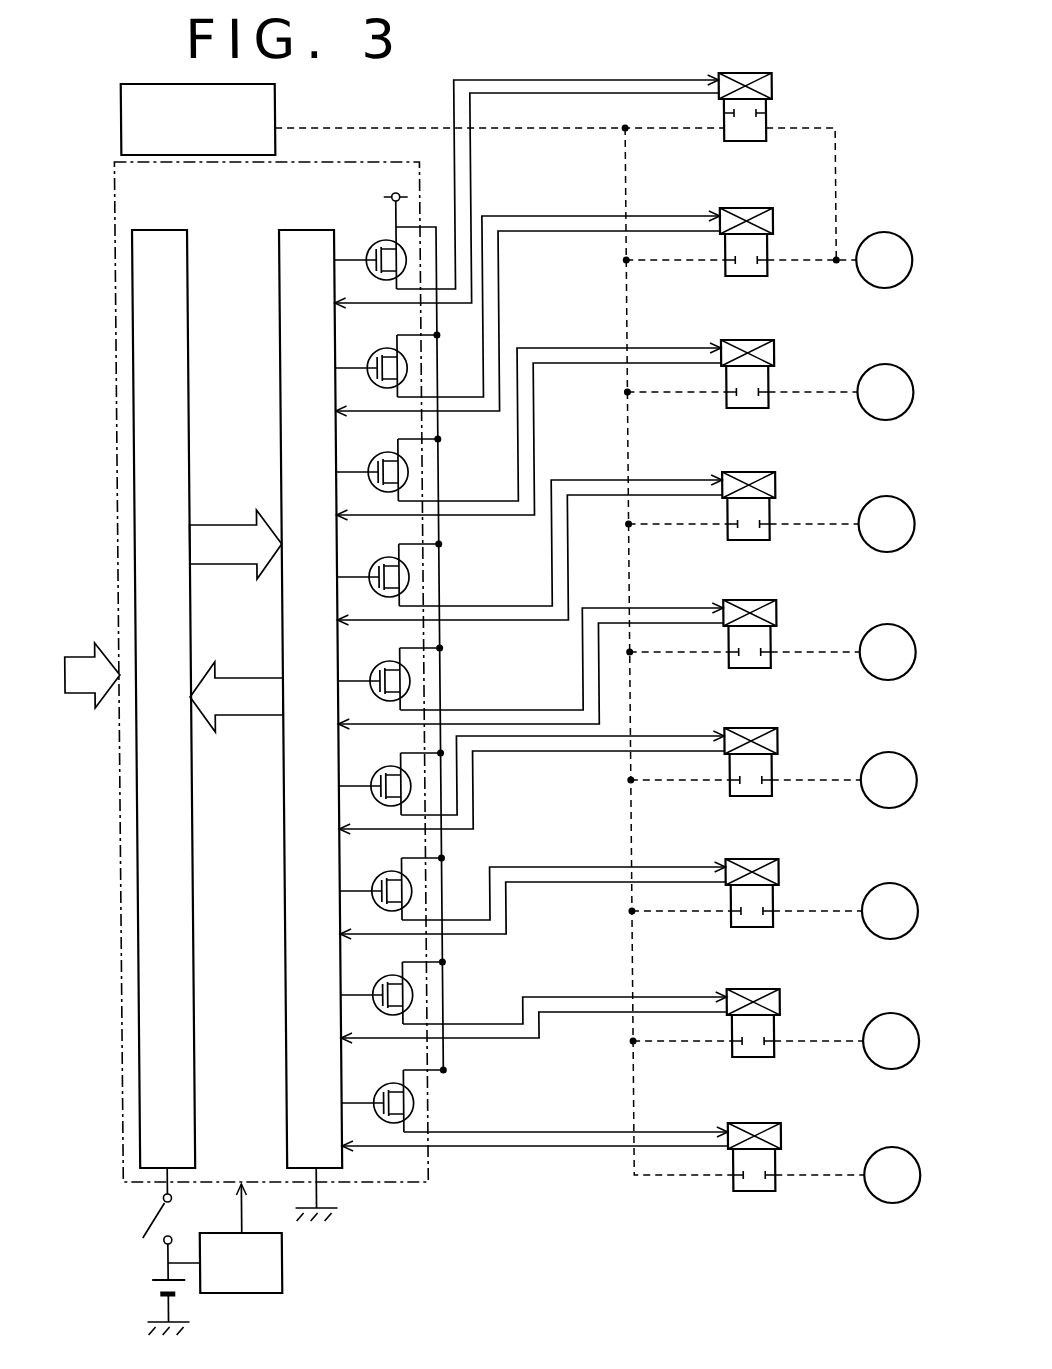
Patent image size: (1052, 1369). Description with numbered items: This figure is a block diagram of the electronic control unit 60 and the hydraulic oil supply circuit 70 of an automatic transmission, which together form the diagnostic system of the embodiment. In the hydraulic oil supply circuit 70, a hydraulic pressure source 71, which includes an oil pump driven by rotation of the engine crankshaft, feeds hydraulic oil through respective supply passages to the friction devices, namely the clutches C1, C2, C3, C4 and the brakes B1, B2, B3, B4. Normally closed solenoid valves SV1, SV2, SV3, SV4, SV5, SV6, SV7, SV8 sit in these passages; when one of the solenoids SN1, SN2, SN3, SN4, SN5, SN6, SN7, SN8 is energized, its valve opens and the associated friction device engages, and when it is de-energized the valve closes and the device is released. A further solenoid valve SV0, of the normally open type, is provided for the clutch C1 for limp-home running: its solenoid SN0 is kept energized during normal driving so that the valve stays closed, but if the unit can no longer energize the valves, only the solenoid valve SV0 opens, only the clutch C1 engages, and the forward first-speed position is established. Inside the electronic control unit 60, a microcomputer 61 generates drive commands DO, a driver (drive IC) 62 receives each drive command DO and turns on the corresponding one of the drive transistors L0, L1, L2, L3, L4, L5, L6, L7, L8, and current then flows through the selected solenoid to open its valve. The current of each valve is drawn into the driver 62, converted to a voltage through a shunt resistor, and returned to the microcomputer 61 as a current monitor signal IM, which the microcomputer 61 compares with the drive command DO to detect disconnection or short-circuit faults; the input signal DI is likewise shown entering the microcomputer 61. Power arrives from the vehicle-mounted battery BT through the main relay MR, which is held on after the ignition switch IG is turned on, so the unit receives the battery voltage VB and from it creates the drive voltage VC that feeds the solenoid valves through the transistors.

The electronic control unit 60 is at (386, 1182).
The microcomputer 61 is at (185, 262).
The driver (drive IC) 62 is at (277, 318).
The hydraulic oil supply circuit 70 is at (646, 1224).
The hydraulic pressure source 71 is at (120, 133).
The drive voltage VC is at (388, 195).
The drive transistor L0 is at (378, 243).
The drive transistor L1 is at (378, 351).
The drive transistor L2 is at (378, 455).
The drive transistor L3 is at (378, 560).
The drive transistor L4 is at (378, 664).
The drive transistor L5 is at (378, 769).
The drive transistor L6 is at (378, 874).
The drive transistor L7 is at (378, 978).
The drive transistor L8 is at (378, 1086).
The solenoid SN0 is at (735, 73).
The solenoid SN1 is at (735, 208).
The solenoid SN2 is at (735, 340).
The solenoid SN3 is at (735, 472).
The solenoid SN4 is at (735, 600).
The solenoid SN5 is at (735, 728).
The solenoid SN6 is at (735, 859).
The solenoid SN7 is at (735, 989).
The solenoid SN8 is at (735, 1123).
The solenoid valve SV0 is at (784, 90).
The solenoid valve SV1 is at (770, 199).
The solenoid valve SV2 is at (770, 331).
The solenoid valve SV3 is at (770, 463).
The solenoid valve SV4 is at (770, 591).
The solenoid valve SV5 is at (770, 719).
The solenoid valve SV6 is at (770, 850).
The solenoid valve SV7 is at (770, 980).
The solenoid valve SV8 is at (770, 1114).
The clutch C1 is at (884, 260).
The clutch C2 is at (885, 392).
The clutch C3 is at (886, 524).
The clutch C4 is at (887, 652).
The brake B1 is at (889, 780).
The brake B2 is at (890, 911).
The brake B3 is at (891, 1041).
The brake B4 is at (892, 1175).
The drive command DO is at (235, 530).
The input signal DI is at (92, 658).
The current monitor signal IM is at (237, 681).
The ignition switch IG is at (137, 1220).
The vehicle-mounted battery BT is at (148, 1294).
The main relay MR is at (271, 1263).
The battery voltage VB is at (215, 1208).